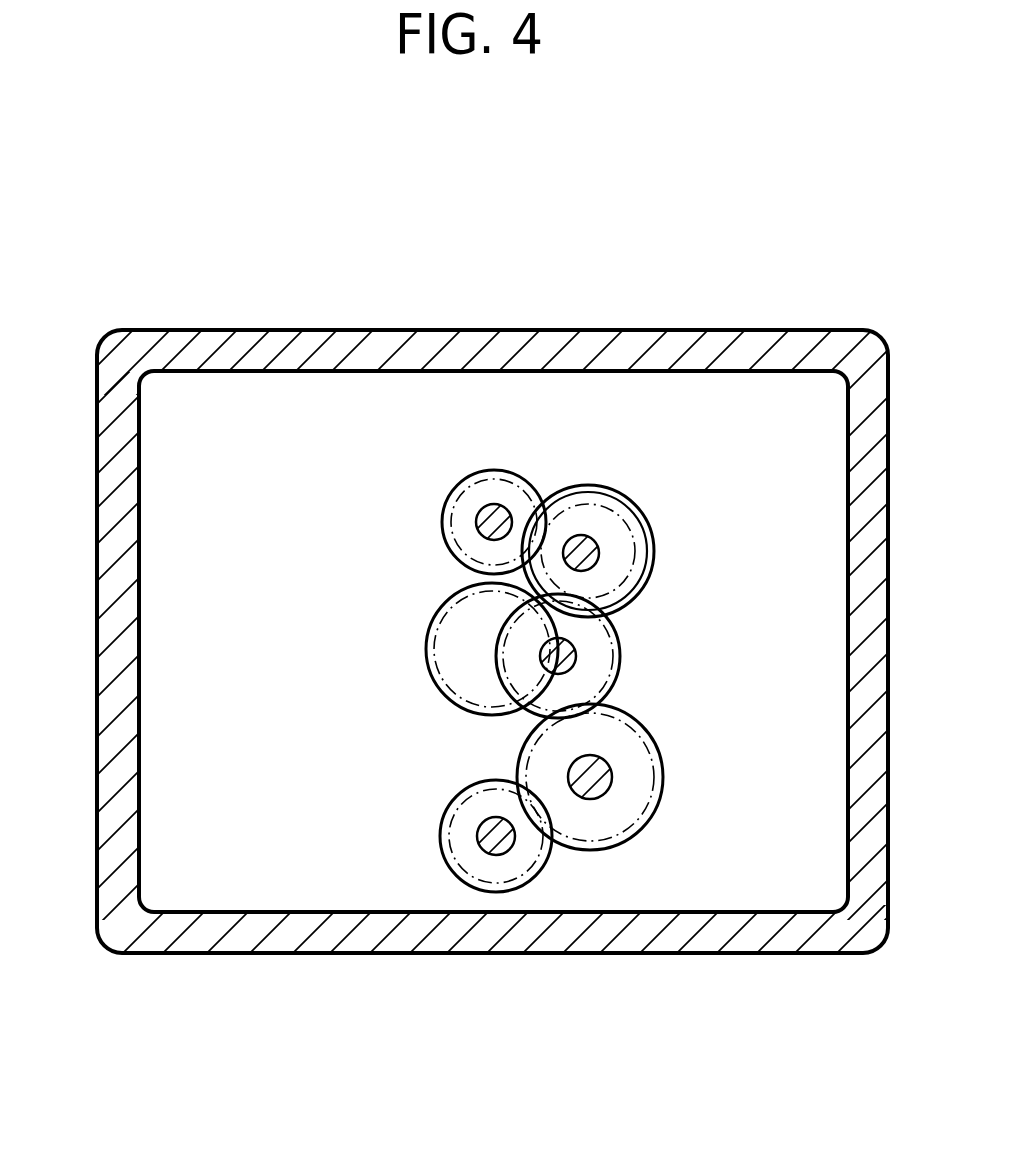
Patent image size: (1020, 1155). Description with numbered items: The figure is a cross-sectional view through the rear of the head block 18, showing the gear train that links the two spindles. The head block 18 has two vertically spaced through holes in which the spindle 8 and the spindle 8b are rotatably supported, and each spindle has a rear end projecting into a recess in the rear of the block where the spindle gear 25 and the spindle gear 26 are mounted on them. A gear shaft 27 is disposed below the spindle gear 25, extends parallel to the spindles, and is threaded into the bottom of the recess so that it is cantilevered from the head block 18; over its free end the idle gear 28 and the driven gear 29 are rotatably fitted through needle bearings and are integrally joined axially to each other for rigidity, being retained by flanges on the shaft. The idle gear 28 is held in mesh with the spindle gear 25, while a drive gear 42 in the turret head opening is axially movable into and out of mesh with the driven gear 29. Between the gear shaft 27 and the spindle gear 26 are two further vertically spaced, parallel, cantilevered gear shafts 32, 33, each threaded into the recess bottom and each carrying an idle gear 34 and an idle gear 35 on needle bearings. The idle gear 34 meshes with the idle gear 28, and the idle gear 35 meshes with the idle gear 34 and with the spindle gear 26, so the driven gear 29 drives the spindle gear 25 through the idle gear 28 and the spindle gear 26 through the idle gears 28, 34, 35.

The head block 18 is at (98, 833).
The spindle gear 25 is at (463, 477).
The spindle 8 is at (490, 505).
The gear shaft 27 is at (577, 535).
The idle gear 28 is at (592, 515).
The driven gear 29 is at (633, 502).
The drive gear 42 is at (447, 644).
The gear shaft 32 is at (574, 655).
The idle gear 34 is at (617, 670).
The gear shaft 33 is at (632, 792).
The idle gear 35 is at (590, 785).
The spindle gear 26 is at (450, 873).
The spindle 8b is at (496, 845).